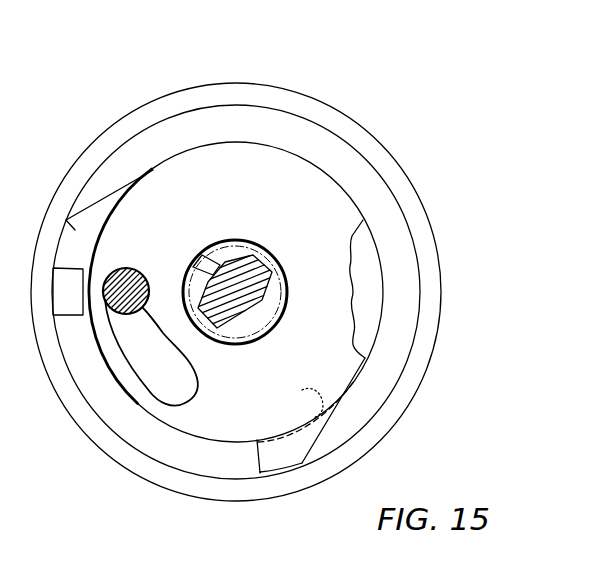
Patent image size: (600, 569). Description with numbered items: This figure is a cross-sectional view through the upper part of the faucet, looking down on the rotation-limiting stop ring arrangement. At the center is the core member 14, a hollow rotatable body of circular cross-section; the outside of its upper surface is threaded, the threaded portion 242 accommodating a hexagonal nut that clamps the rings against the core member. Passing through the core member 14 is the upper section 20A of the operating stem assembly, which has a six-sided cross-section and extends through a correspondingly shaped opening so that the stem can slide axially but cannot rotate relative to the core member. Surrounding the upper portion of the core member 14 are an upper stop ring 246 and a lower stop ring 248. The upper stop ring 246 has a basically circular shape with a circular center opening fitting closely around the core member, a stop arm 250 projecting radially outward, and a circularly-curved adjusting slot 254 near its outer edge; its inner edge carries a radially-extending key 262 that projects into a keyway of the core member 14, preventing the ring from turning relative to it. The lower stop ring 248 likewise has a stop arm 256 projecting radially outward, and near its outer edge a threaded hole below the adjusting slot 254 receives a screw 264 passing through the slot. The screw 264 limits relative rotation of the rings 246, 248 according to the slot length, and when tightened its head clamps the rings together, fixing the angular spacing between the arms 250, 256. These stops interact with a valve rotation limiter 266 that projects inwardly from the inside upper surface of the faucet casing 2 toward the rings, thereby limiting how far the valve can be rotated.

The faucet casing 2 is at (262, 84).
The core member 14 is at (256, 295).
The upper section of the operating stem assembly 20A is at (260, 297).
The threaded portion 242 is at (248, 345).
The upper stop ring 246 is at (347, 195).
The lower stop ring 248 is at (377, 283).
The stop arm 250 is at (275, 452).
The adjusting slot 254 is at (150, 392).
The stop arm 256 is at (66, 220).
The key 262 is at (217, 257).
The screw 264 is at (118, 283).
The valve rotation limiter 266 is at (73, 288).